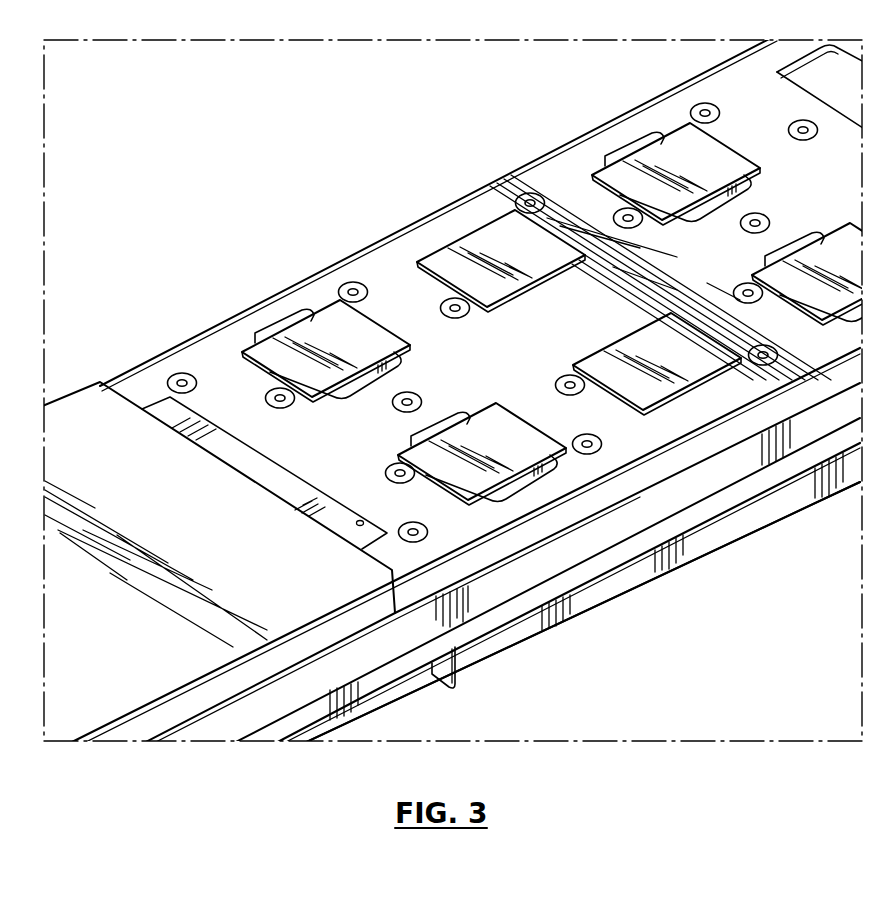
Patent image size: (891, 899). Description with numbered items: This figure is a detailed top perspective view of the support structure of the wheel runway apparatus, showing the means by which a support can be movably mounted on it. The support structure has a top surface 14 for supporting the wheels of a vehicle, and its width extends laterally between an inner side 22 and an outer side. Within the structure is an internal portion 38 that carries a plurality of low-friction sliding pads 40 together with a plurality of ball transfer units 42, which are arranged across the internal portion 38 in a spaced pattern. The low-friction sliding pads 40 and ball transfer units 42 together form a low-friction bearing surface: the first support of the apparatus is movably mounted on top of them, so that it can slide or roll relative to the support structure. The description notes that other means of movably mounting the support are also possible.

The top surface 14 is at (179, 528).
The inner side 22 is at (382, 690).
The internal portion 38 is at (222, 373).
The low-friction sliding pad 40 is at (630, 160).
The ball transfer unit 42 is at (705, 103).